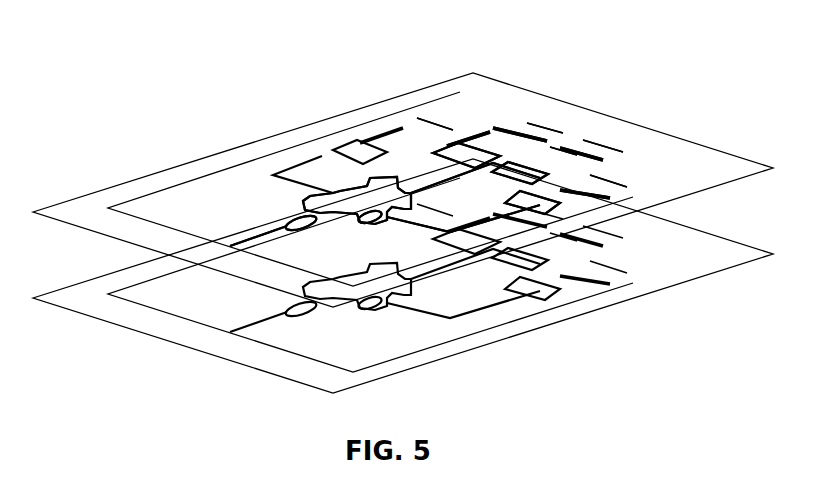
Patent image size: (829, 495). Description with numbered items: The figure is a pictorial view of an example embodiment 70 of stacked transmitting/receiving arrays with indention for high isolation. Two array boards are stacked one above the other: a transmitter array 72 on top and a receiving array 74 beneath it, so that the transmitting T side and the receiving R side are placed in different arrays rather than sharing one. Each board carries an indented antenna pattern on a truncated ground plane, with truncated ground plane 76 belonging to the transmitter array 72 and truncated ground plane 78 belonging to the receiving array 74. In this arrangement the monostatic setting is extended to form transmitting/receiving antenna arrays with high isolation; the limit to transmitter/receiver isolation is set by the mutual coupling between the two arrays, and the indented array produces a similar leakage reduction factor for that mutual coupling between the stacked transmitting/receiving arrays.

The stacked transmitting/receiving arrays 70 is at (118, 73).
The transmitter array 72 is at (80, 193).
The receiving array 74 is at (80, 280).
The truncated ground plane 76 is at (235, 185).
The truncated ground plane 78 is at (427, 335).
The transmitting T is at (704, 130).
The receiving R is at (704, 220).